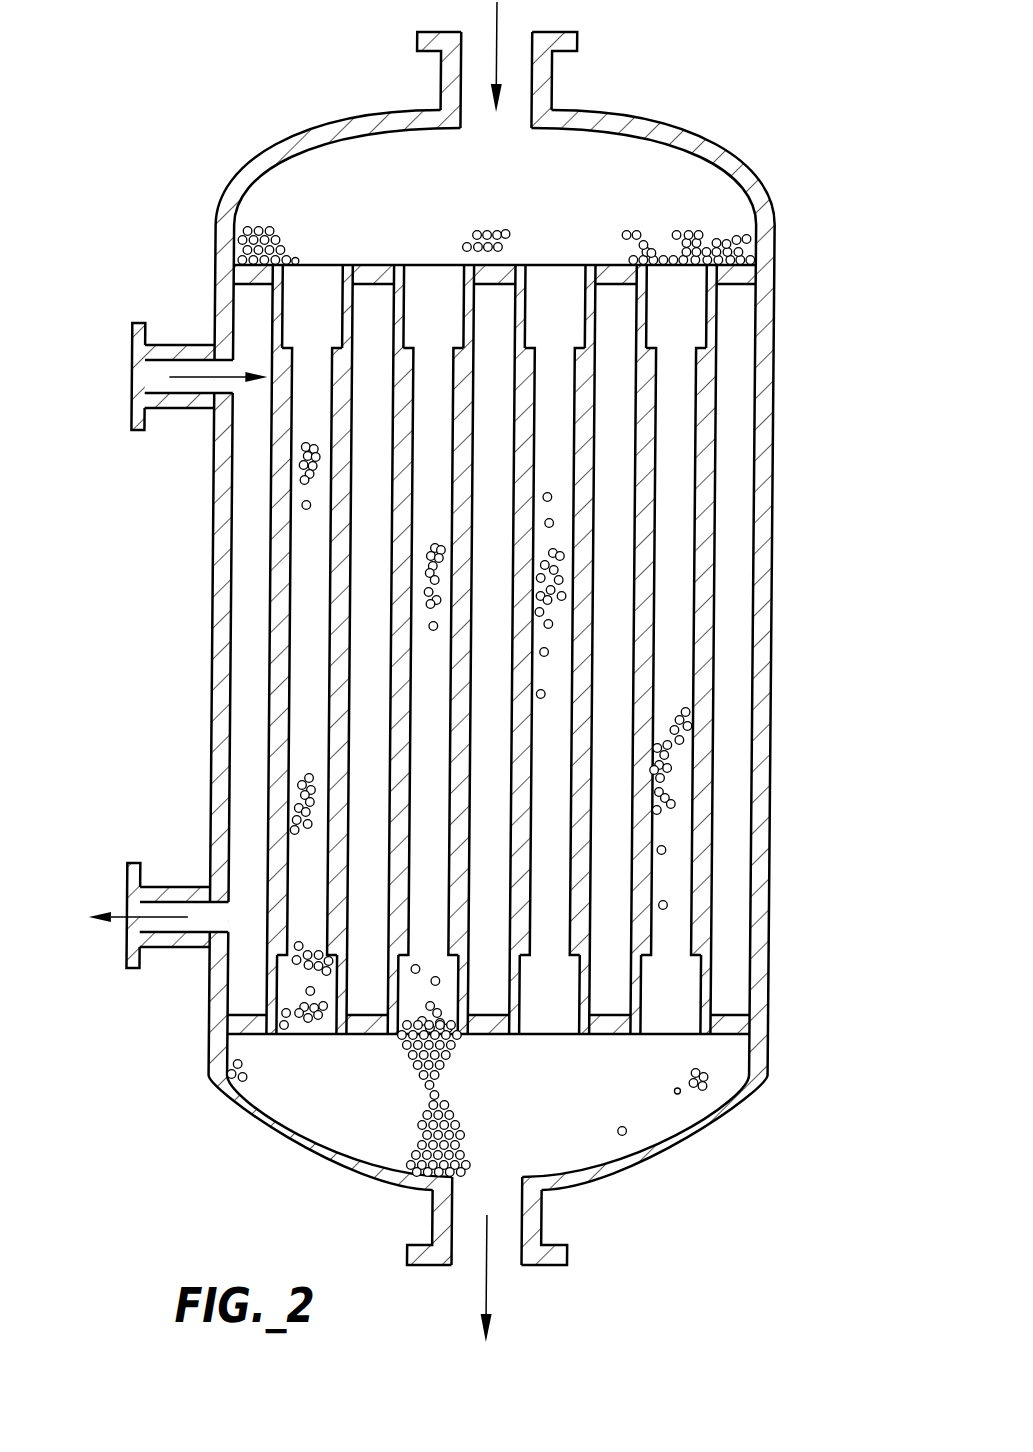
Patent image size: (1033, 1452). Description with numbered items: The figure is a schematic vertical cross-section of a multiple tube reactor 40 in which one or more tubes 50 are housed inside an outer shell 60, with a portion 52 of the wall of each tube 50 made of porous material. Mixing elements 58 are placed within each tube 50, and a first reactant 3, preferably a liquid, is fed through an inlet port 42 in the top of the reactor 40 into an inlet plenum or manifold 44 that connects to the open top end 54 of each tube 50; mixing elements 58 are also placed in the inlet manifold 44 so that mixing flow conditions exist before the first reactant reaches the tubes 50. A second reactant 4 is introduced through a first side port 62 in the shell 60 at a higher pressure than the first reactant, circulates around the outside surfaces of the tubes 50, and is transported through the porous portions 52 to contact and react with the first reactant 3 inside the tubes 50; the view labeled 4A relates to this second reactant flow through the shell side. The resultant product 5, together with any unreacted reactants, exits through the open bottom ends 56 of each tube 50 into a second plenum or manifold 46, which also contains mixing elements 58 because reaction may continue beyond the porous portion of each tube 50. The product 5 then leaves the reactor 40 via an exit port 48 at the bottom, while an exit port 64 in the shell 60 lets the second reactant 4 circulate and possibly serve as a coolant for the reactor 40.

The multiple tube reactor 40 is at (817, 583).
The inlet port 42 is at (547, 80).
The inlet plenum or manifold 44 is at (422, 183).
The second plenum or manifold 46 is at (578, 1160).
The exit port 48 is at (438, 1217).
The tubes 50 is at (269, 972).
The porous portion 52 is at (712, 757).
The open top end 54 is at (323, 280).
The open bottom ends 56 is at (566, 1027).
The mixing elements 58 is at (399, 1084).
The outer shell 60 is at (772, 850).
The first side port 62 is at (179, 343).
The exit port 64 is at (187, 886).
The first reactant 3 is at (835, 430).
The second reactant 4 is at (200, 377).
The section line 4A is at (174, 917).
The resultant product 5 is at (492, 1297).